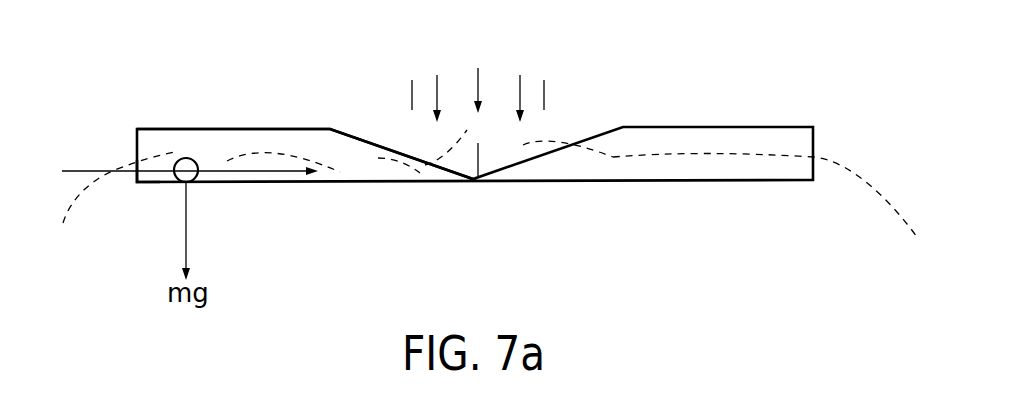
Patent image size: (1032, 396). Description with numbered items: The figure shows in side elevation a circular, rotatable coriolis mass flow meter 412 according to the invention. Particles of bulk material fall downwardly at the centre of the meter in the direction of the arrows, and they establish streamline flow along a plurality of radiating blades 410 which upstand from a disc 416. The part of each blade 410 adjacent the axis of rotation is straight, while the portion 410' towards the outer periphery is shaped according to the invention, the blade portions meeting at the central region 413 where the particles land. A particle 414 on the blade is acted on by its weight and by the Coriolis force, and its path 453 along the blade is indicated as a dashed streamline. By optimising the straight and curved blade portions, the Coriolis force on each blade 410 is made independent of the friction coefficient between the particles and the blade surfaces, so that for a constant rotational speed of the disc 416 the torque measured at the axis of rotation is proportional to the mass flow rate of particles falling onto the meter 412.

The radiating blade 410 is at (475, 119).
The sloped plate portion 410' is at (305, 118).
The coriolis mass flow meter 412 is at (834, 59).
The vertex of V-shaped plate 413 is at (478, 178).
The ball 414 is at (191, 158).
The disc 416 is at (147, 183).
The flow path 453 is at (241, 142).